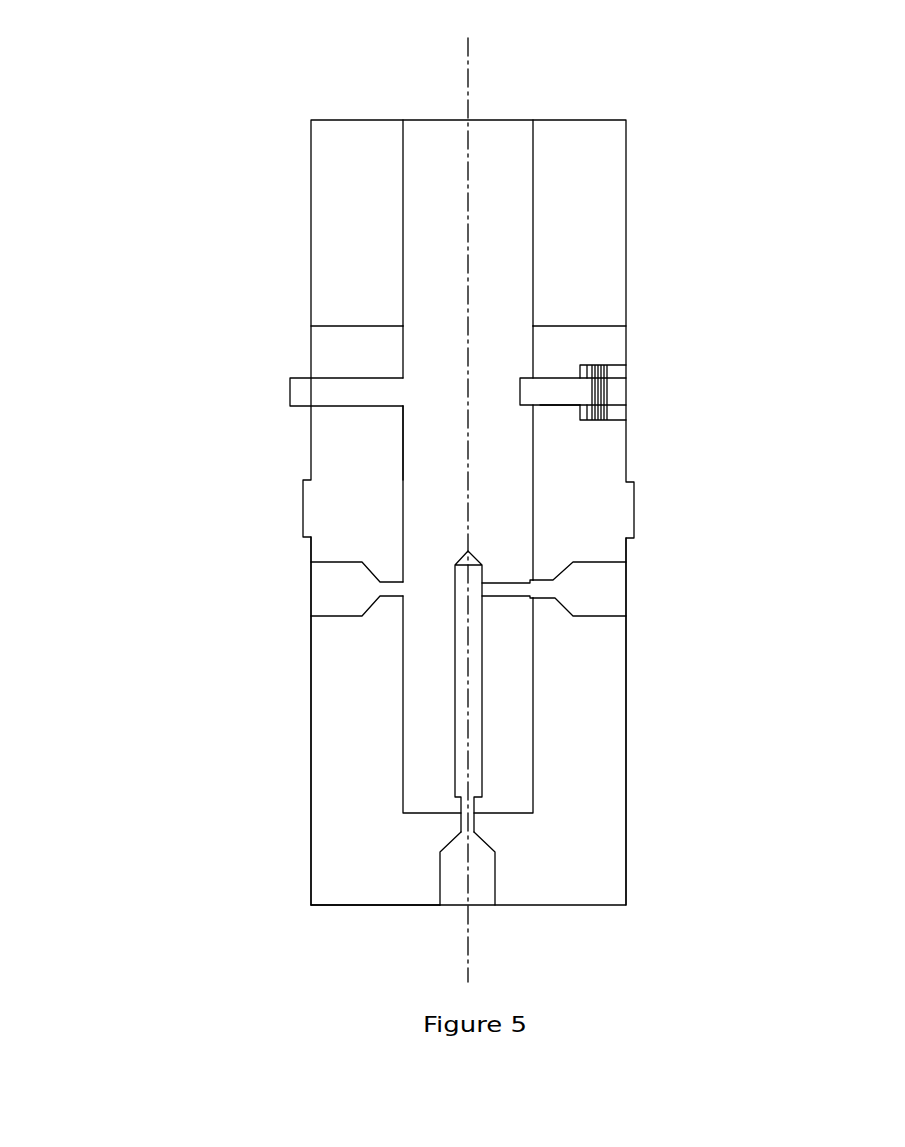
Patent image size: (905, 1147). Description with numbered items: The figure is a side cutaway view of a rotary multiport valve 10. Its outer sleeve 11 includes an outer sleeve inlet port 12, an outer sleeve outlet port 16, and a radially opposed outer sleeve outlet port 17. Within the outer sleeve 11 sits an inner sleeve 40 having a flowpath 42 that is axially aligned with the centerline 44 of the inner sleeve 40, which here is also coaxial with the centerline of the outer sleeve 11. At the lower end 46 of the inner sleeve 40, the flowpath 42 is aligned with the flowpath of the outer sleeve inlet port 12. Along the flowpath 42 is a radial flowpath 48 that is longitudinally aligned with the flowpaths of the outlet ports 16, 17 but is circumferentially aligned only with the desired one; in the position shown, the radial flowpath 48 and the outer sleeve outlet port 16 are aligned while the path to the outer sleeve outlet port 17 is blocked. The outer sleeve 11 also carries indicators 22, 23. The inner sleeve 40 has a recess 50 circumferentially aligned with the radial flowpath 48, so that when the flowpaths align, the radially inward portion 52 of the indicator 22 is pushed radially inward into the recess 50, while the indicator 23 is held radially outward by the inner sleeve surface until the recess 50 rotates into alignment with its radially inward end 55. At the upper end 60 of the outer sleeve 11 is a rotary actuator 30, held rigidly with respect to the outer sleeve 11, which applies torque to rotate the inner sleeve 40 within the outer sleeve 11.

The rotary multiport valve 10 is at (267, 203).
The outer sleeve 11 is at (347, 779).
The outer sleeve inlet port 12 is at (482, 875).
The outer sleeve outlet port 16 is at (592, 602).
The outer sleeve outlet port 17 is at (339, 596).
The indicator 22 is at (617, 385).
The indicator 23 is at (313, 392).
The rotary actuator 30 is at (597, 143).
The inner sleeve 40 is at (510, 493).
The flowpath 42 is at (470, 710).
The centerline 44 is at (468, 83).
The lower end 46 is at (402, 903).
The radial flowpath 48 is at (508, 587).
The recess 50 is at (520, 392).
The radially inward portion 52 is at (540, 393).
The radially inward end 55 is at (403, 390).
The upper end 60 is at (311, 120).